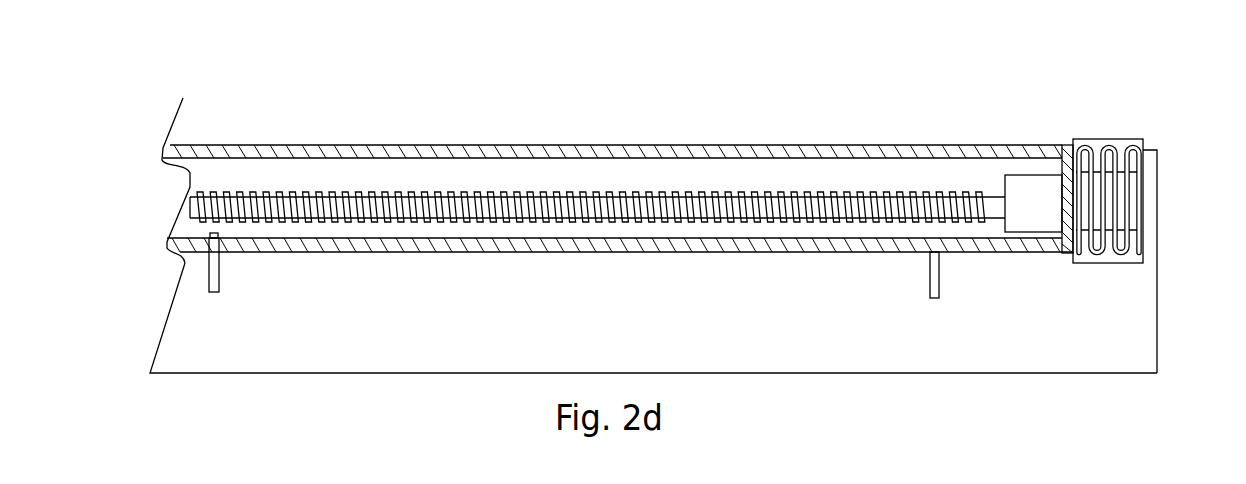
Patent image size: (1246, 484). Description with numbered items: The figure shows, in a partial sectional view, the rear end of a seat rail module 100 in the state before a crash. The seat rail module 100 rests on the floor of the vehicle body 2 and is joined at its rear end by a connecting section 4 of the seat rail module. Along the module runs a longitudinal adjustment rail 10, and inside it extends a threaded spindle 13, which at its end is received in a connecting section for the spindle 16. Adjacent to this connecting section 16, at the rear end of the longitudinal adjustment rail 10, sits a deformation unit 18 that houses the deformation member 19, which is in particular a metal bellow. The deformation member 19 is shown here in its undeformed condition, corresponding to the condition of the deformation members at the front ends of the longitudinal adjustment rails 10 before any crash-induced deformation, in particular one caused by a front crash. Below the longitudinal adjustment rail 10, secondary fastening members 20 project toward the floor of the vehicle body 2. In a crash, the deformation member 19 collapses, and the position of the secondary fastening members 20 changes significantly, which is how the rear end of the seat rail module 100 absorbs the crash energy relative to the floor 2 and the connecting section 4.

The seat rail module 100 is at (187, 53).
The floor of vehicle body 2 is at (893, 353).
The connecting section at rear end of seat rail module 4 is at (1148, 202).
The longitudinal adjustment rail 10 is at (465, 150).
The threaded spindle 13 is at (313, 193).
The connecting section for spindle 16 is at (1025, 192).
The deformation unit 18 is at (1108, 138).
The deformation member 19 is at (1113, 188).
The secondary fastening member 20 is at (215, 275).